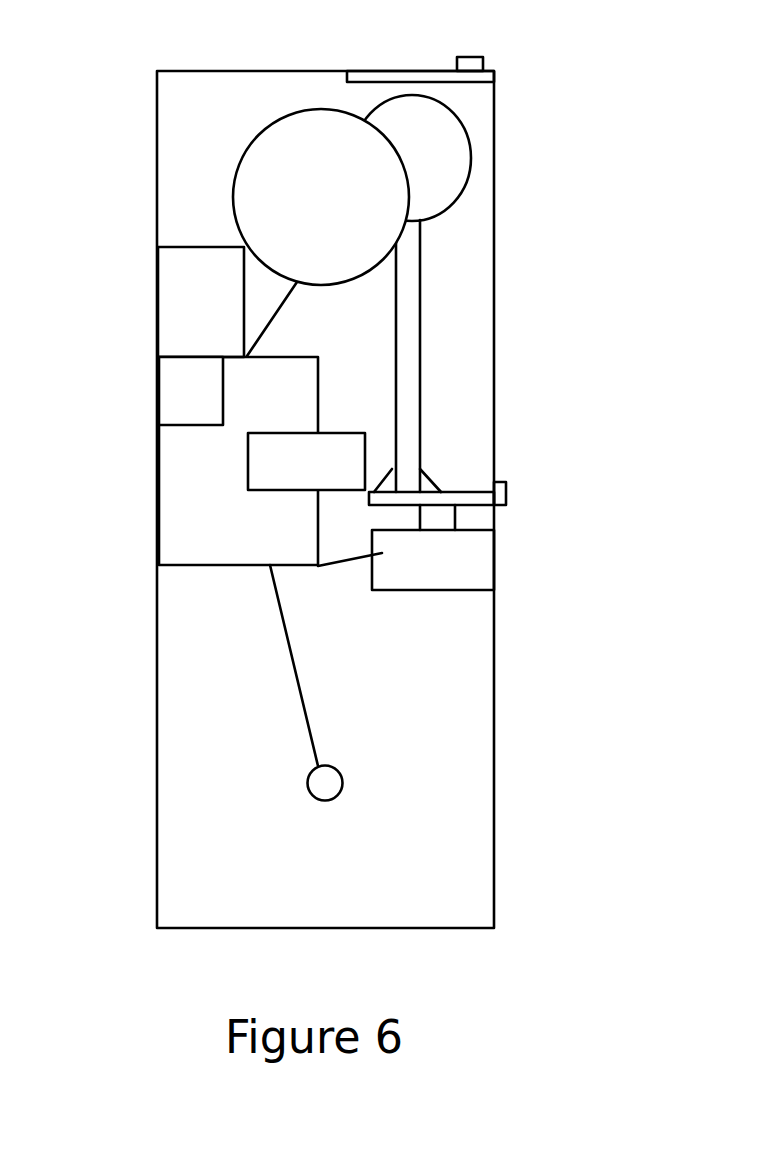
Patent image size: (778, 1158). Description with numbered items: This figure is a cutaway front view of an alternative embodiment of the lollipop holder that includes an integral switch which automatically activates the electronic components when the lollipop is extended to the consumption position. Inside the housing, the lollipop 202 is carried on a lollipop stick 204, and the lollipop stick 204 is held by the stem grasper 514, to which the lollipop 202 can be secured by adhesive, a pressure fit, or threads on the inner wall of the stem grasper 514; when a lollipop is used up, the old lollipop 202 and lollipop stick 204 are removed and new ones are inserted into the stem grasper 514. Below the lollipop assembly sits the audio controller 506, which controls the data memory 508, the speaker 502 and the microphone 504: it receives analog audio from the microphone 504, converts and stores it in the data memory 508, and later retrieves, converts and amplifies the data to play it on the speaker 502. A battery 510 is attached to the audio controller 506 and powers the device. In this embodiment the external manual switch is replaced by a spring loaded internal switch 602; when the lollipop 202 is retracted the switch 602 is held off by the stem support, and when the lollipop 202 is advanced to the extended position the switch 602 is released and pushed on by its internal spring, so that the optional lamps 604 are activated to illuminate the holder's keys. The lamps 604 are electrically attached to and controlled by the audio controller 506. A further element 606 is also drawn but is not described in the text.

The lollipop 202 is at (445, 170).
The lollipop stick 204 is at (407, 383).
The speaker 502 is at (260, 195).
The microphone 504 is at (317, 790).
The audio controller 506 is at (295, 407).
The data memory 508 is at (195, 320).
The battery 510 is at (455, 553).
The stem grasper 514 is at (383, 78).
The spring loaded internal switch 602 is at (443, 517).
The lamps 604 is at (270, 463).
The side box 606 is at (180, 380).